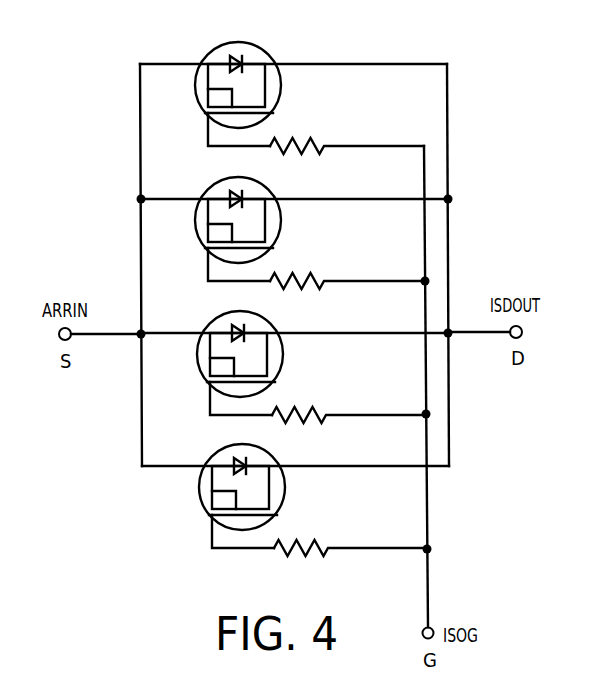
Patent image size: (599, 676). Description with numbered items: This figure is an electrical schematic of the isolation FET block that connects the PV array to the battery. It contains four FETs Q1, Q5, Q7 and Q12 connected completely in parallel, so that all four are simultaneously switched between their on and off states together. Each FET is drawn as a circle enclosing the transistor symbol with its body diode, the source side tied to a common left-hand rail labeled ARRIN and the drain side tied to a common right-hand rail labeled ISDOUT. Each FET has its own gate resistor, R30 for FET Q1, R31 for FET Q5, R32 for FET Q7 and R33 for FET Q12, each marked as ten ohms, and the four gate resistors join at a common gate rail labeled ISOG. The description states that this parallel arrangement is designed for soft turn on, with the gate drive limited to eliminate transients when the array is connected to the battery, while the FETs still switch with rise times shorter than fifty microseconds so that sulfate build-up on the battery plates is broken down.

The FET Q1 is at (267, 81).
The power MOSFET transistor IRFIZ4BG Q5 is at (267, 216).
The FET Q7 is at (269, 350).
The FET Q12 is at (271, 484).
The gate resistor 10.0 ohm R30 is at (347, 120).
The gate resistor 10.0 ohm R31 is at (347, 255).
The gate resistor 10.0 ohm R32 is at (349, 388).
The gate resistor 10.0 ohm R33 is at (350, 522).